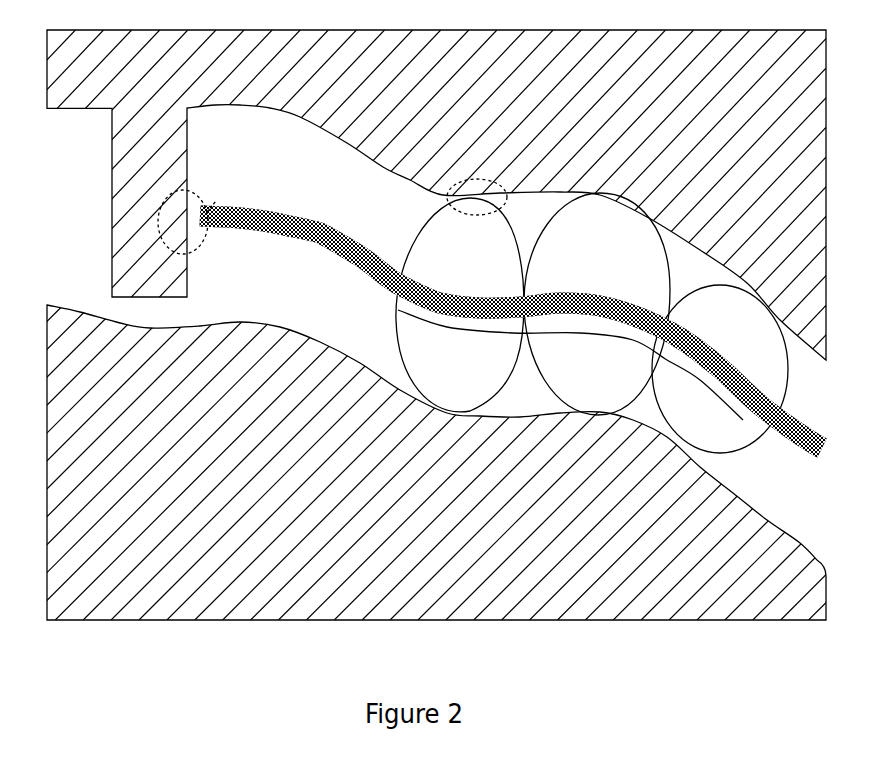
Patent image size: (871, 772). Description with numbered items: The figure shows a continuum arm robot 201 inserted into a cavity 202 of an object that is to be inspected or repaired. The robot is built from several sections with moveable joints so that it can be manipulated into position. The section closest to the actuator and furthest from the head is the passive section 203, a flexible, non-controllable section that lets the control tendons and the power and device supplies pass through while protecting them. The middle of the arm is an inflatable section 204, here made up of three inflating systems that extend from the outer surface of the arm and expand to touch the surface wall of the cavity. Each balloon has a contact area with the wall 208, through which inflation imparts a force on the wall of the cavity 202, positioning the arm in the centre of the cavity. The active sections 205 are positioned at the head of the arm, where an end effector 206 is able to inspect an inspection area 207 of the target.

The continuum arm robot 201 is at (503, 294).
The cavity 202 is at (378, 171).
The passive section 203 is at (511, 364).
The inflatable section 204 is at (597, 304).
The active sections 205 is at (477, 331).
The end effector 206 is at (212, 206).
The inspection area 207 is at (205, 184).
The contact area with the wall 208 is at (470, 193).